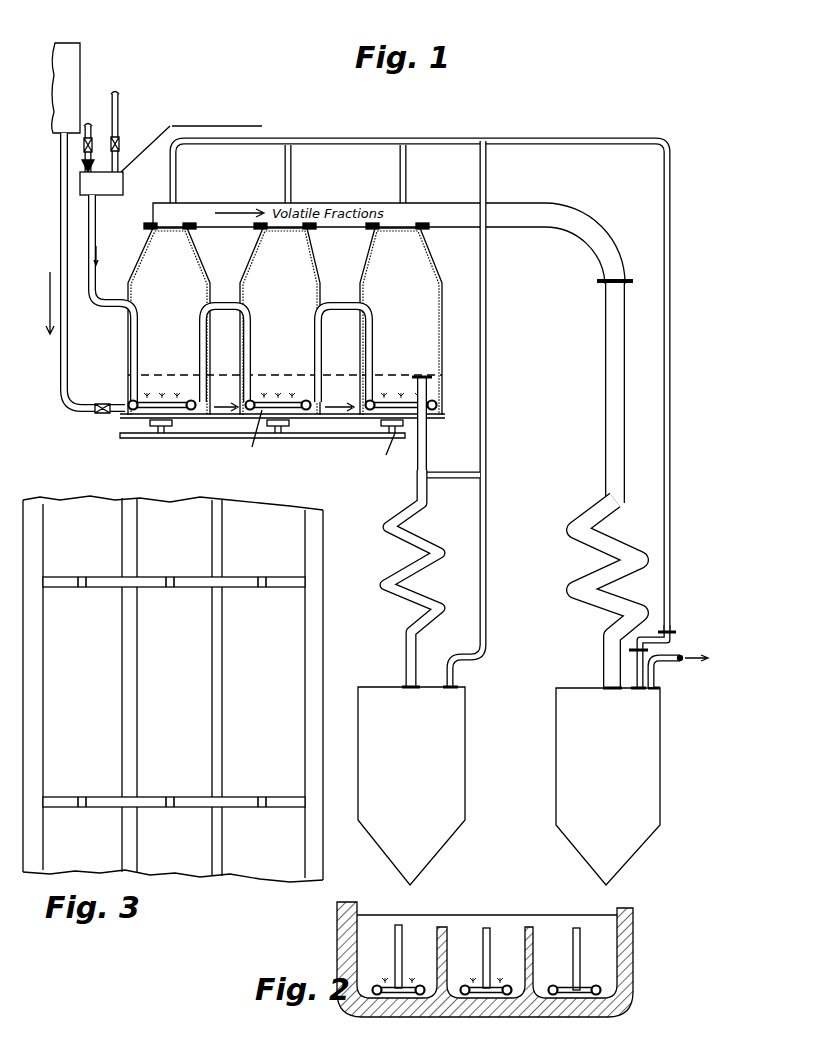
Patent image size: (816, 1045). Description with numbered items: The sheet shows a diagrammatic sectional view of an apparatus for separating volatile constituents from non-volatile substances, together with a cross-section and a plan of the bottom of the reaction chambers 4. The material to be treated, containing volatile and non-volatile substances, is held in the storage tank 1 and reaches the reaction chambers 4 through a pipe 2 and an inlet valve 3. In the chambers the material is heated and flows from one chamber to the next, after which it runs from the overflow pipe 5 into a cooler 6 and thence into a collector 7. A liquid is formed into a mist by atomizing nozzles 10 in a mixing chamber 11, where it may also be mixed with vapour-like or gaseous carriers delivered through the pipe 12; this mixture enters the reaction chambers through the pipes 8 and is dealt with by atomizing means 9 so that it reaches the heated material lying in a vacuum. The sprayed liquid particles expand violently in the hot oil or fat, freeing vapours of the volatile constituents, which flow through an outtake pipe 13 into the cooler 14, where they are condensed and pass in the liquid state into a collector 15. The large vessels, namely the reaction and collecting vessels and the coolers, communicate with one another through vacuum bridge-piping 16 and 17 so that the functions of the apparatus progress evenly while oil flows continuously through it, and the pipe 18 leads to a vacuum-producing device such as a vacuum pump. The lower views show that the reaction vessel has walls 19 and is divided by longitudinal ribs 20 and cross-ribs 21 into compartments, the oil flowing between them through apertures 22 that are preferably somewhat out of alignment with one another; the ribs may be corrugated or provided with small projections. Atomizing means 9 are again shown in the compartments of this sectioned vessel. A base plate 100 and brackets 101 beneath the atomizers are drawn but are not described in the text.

In FIG. 1, the storage tank 1 is at (77, 80).
In FIG. 1, the pipe 2 is at (62, 235).
In FIG. 1, the inlet valve 3 is at (100, 413).
In FIG. 1, the reaction chambers 4 is at (285, 319).
In FIG. 1, the overflow pipe 5 is at (430, 378).
In FIG. 1, the cooler 6 is at (414, 508).
In FIG. 1, the collector 7 is at (459, 761).
In FIG. 1, the pipes 8 is at (92, 248).
In FIG. 1, the atomizing means 9 is at (165, 410).
In FIG. 2, the atomizing means 9 is at (388, 994).
In FIG. 1, the atomizing nozzles 10 is at (84, 170).
In FIG. 1, the mixing chamber 11 is at (118, 190).
In FIG. 1, the pipe 12 is at (118, 112).
In FIG. 1, the outtake pipe 13 is at (607, 325).
In FIG. 1, the cooler 14 is at (592, 576).
In FIG. 1, the collector 15 is at (561, 800).
In FIG. 1, the vacuum bridge-piping 16 is at (543, 146).
In FIG. 1, the vacuum bridge-piping 17 is at (487, 382).
In FIG. 1, the pipe 18 is at (674, 662).
In FIG. 3, the walls 19 is at (318, 660).
In FIG. 2, the walls 19 is at (342, 908).
In FIG. 3, the longitudinal ribs 20 is at (220, 672).
In FIG. 2, the longitudinal ribs 20 is at (447, 935).
In FIG. 3, the cross-ribs 21 is at (66, 578).
In FIG. 2, the cross-ribs 21 is at (605, 955).
In FIG. 3, the apertures 22 is at (82, 590).
In FIG. 2, the apertures 22 is at (401, 940).
In FIG. 1, the base plate 100 is at (300, 438).
In FIG. 1, the bracket 101 is at (175, 428).